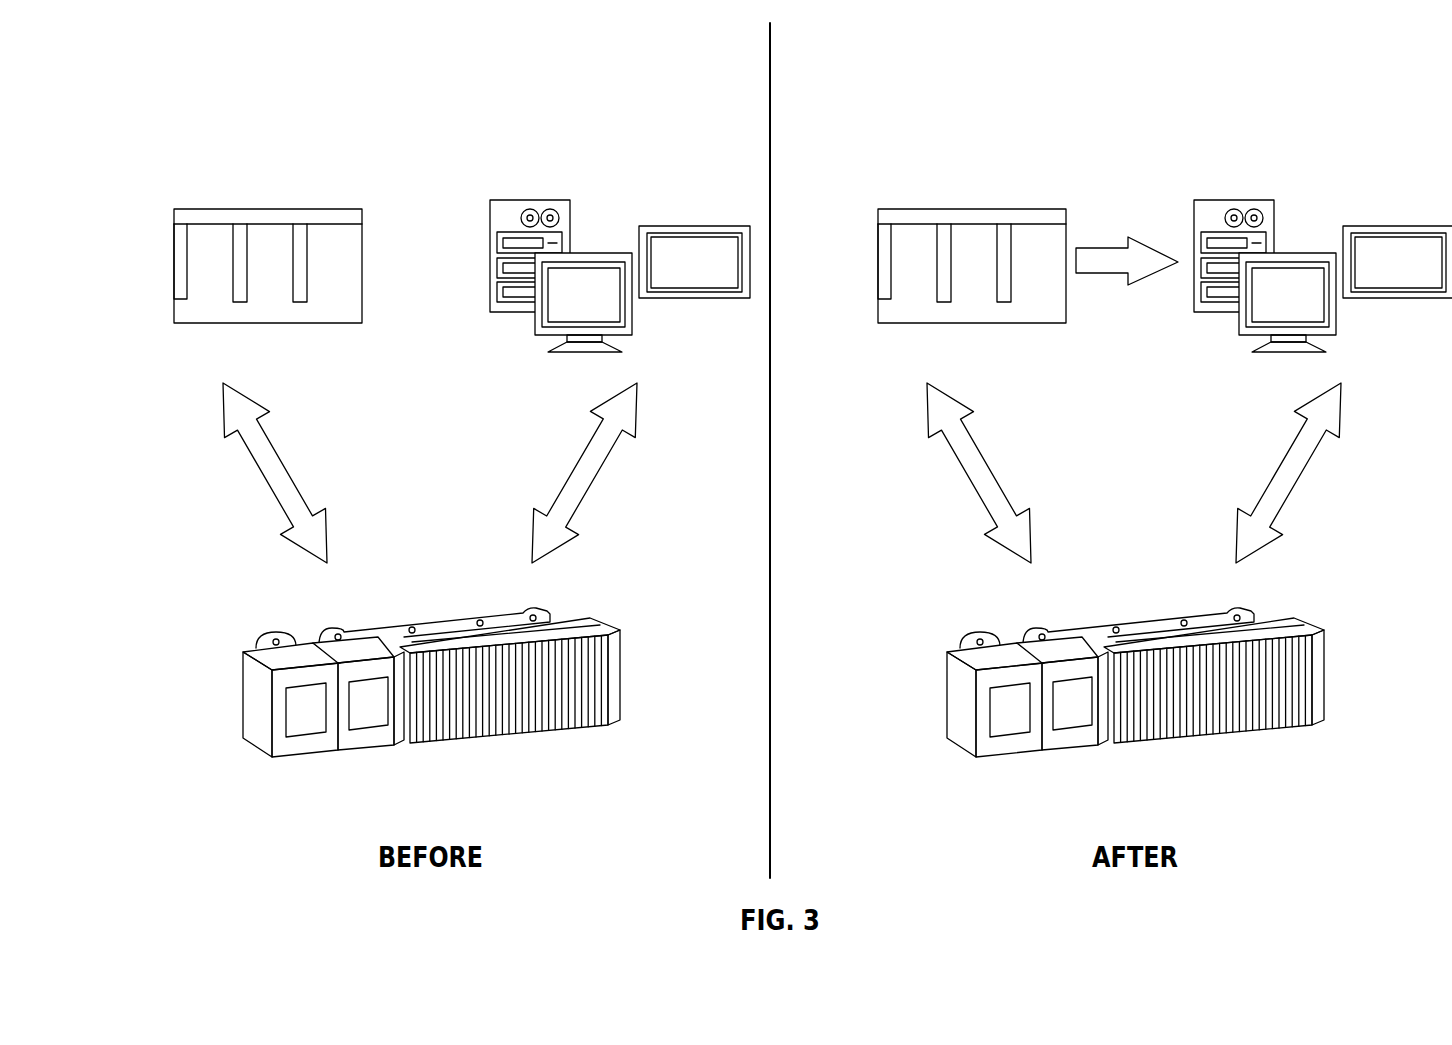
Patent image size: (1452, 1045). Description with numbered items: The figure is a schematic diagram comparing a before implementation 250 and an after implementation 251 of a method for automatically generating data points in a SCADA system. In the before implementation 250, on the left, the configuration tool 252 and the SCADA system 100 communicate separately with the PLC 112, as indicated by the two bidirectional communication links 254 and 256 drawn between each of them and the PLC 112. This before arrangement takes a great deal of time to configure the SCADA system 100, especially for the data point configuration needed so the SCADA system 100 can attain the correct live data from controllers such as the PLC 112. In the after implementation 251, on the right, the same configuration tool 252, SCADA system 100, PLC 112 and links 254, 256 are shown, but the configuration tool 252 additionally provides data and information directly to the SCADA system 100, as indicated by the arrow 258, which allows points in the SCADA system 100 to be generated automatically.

The before implementation 250 is at (196, 82).
The after implementation 251 is at (1349, 84).
The configuration tool 252 is at (169, 281).
The SCADA system 100 is at (658, 319).
The bidirectional communication link 254 is at (260, 480).
The bidirectional communication link 256 is at (598, 480).
The PLC 112 is at (473, 759).
The arrow 258 is at (1112, 275).